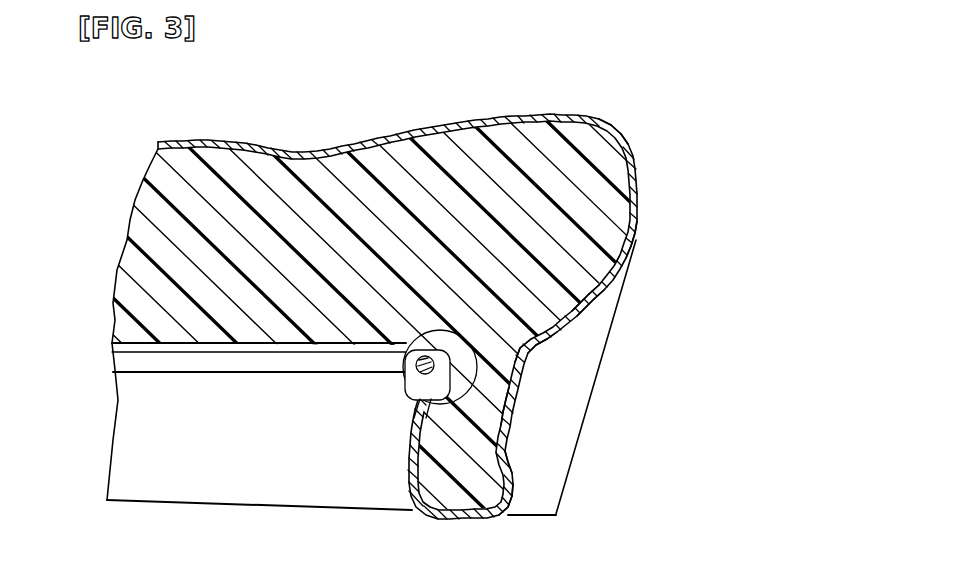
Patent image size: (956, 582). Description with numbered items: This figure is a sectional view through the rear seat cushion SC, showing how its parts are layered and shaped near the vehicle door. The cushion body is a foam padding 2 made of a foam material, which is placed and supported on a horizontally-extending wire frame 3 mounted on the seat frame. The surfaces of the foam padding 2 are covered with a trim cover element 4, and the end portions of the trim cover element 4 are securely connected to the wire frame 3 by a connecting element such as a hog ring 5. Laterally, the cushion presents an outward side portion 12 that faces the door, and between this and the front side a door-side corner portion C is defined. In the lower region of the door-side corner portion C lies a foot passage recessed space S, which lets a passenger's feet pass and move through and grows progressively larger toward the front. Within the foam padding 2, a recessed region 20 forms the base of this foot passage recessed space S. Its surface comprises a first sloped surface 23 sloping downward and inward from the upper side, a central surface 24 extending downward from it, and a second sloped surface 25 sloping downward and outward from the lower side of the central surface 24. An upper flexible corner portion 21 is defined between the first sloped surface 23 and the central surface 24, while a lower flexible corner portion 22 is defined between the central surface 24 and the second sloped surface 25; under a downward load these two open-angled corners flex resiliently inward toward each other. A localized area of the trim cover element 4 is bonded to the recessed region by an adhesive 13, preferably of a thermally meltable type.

The foam padding 2 is at (462, 160).
The wire frame 3 is at (248, 366).
The trim cover element 4 is at (633, 187).
The hog ring 5 is at (410, 392).
The outward side portion 12 is at (634, 243).
The adhesive 13 is at (592, 291).
The recessed region 20 is at (532, 348).
The upper flexible corner portion 21 is at (536, 358).
The lower flexible corner portion 22 is at (510, 468).
The first sloped surface 23 is at (590, 297).
The central surface 24 is at (517, 417).
The second sloped surface 25 is at (513, 490).
The foot passage recessed space S is at (540, 398).
The door-side corner portion C is at (540, 447).
The seat cushion SC is at (641, 134).